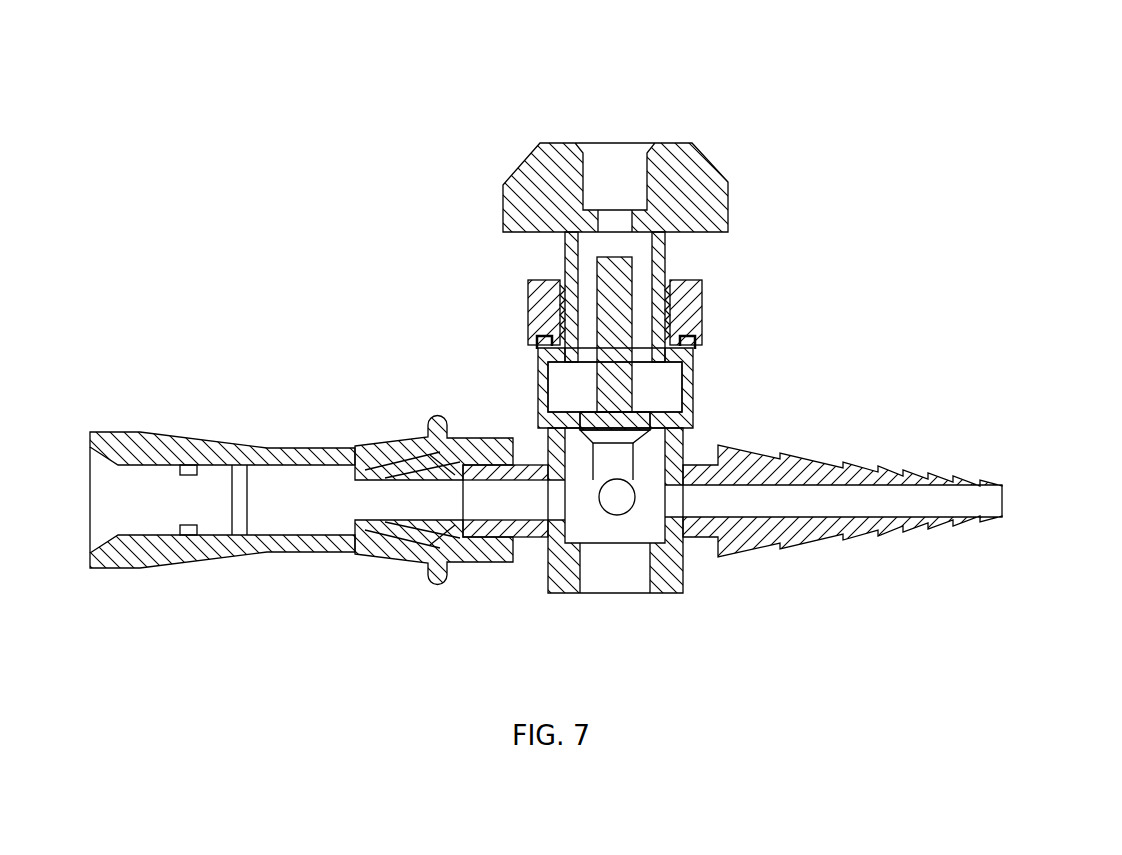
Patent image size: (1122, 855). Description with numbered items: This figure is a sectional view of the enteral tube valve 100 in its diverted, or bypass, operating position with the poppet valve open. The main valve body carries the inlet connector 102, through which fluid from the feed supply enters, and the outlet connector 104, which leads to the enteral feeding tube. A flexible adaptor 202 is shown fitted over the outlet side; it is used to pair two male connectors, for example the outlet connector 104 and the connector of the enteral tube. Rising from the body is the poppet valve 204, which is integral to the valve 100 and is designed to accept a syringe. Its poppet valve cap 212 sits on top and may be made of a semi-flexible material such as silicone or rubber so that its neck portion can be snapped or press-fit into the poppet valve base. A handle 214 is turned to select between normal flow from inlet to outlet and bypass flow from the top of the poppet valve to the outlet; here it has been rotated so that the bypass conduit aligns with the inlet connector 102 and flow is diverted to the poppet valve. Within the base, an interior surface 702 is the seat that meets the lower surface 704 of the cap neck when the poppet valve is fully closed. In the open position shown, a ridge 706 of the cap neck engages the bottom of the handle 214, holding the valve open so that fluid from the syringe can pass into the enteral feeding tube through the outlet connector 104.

The valve 100 is at (963, 132).
The inlet connector 102 is at (913, 535).
The outlet connector 104 is at (480, 547).
The flexible adaptor 202 is at (255, 447).
The poppet valve 204 is at (747, 167).
The poppet valve cap 212 is at (510, 178).
The handle 214 is at (528, 313).
The interior surface 702 is at (557, 408).
The lower surface 704 is at (680, 365).
The ridge 706 is at (702, 337).